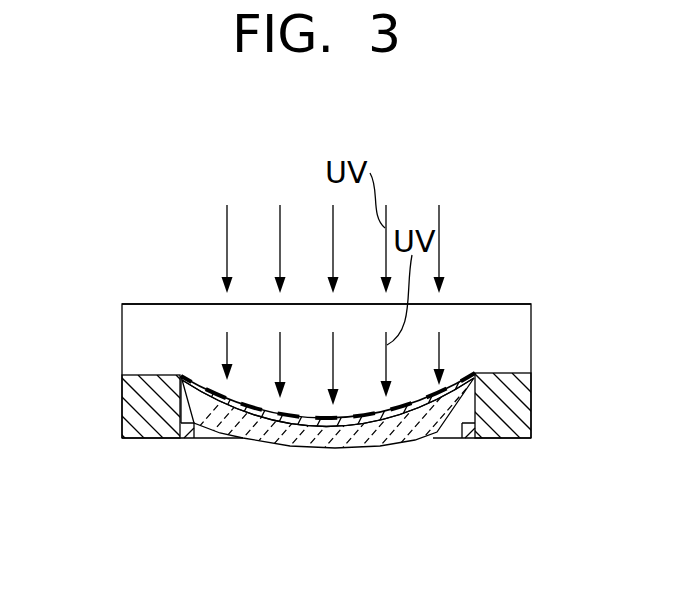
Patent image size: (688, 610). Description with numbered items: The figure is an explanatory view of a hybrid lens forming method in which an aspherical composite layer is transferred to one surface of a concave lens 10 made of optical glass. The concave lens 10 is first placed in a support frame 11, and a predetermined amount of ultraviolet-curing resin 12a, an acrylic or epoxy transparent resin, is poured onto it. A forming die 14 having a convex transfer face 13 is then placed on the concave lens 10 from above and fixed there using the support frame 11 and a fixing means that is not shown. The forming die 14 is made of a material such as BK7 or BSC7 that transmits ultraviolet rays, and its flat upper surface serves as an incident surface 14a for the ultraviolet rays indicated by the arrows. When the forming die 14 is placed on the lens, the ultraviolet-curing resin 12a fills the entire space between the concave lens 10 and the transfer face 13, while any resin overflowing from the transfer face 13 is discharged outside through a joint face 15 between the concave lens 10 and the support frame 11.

The concave lens 10 is at (280, 427).
The support frame 11 is at (500, 415).
The ultraviolet-curing resin 12a is at (387, 420).
The convex transfer face 13 is at (320, 418).
The forming die 14 is at (153, 348).
The incident surface 14a is at (500, 304).
The joint face 15 is at (181, 394).